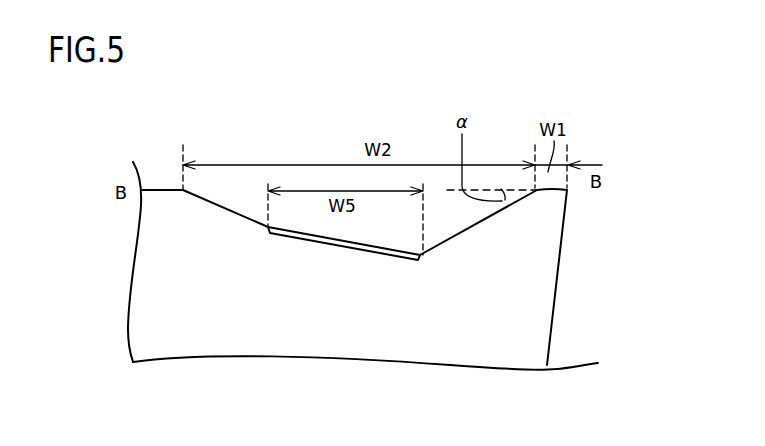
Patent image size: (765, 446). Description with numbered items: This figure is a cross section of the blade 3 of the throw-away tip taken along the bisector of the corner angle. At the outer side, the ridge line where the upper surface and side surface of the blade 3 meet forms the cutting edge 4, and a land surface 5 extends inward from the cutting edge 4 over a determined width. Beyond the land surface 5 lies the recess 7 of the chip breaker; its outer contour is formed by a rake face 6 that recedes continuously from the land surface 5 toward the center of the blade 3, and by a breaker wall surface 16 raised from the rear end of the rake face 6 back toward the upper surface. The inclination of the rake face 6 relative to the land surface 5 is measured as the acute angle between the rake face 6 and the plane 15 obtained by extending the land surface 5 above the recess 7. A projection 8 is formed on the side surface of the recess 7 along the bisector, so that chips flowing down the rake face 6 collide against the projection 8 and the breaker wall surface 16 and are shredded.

The blade 3 is at (548, 272).
The cutting edge 4 is at (568, 192).
The land surface 5 is at (551, 185).
The rake face 6 is at (447, 243).
The recess 7 is at (443, 222).
The projection 8 is at (347, 245).
The plane 15 is at (486, 165).
The breaker wall surface 16 is at (235, 210).